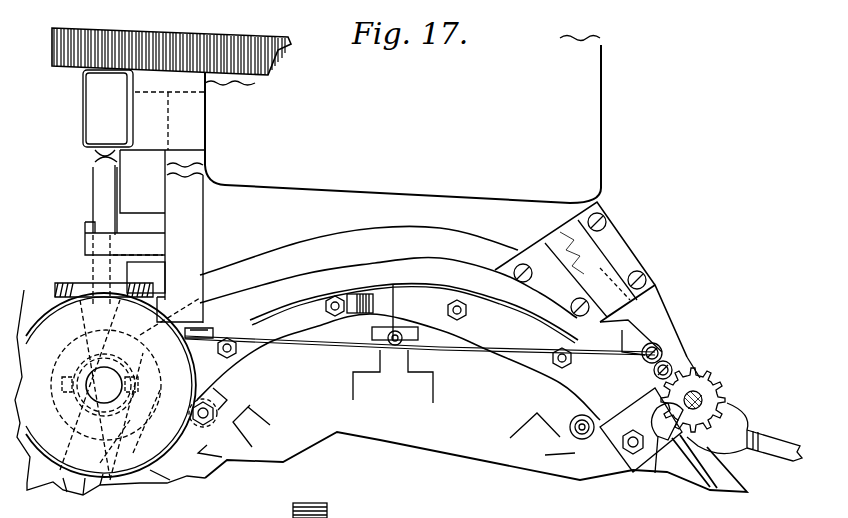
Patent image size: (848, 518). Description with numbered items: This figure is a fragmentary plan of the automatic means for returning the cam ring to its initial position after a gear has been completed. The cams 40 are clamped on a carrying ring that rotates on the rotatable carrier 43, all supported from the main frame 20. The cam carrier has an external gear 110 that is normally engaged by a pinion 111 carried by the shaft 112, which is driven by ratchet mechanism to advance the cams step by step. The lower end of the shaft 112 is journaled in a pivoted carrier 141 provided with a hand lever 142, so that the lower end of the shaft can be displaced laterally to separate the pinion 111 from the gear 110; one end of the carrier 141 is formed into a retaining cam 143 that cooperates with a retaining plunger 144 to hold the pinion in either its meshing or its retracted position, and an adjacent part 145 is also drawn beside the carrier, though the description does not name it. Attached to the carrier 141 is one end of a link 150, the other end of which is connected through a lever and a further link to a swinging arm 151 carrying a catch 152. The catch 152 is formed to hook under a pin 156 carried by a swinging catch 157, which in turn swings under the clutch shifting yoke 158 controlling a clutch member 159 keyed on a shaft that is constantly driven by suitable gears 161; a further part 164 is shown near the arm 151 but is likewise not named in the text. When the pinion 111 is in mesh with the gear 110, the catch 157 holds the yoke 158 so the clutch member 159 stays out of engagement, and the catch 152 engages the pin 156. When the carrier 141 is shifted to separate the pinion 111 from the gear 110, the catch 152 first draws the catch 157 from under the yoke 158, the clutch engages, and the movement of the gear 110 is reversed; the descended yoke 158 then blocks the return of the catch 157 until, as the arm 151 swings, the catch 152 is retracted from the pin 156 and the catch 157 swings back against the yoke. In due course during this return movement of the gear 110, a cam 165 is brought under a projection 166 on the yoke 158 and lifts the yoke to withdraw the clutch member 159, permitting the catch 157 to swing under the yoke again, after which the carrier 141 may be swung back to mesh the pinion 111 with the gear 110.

The main frame 20 is at (601, 152).
The cams 40 is at (398, 324).
The rotatable carrier 43 is at (458, 445).
The external gear 110 is at (653, 407).
The pinion 111 is at (718, 380).
The shaft 112 is at (702, 397).
The pivoted carrier 141 is at (730, 420).
The hand lever 142 is at (786, 460).
The retaining cam 143 is at (645, 337).
The retaining plunger 144 is at (627, 308).
The pawl 145 is at (659, 440).
The link 150 is at (490, 343).
The swinging arm 151 is at (176, 317).
The catch 152 is at (112, 385).
The pin 156 is at (106, 385).
The swinging catch 157 is at (148, 278).
The clutch shifting yoke 158 is at (95, 211).
The clutch member 159 is at (110, 392).
The gears 161 is at (60, 298).
The bolt 164 is at (224, 352).
The cam 165 is at (352, 312).
The projection 166 is at (166, 468).